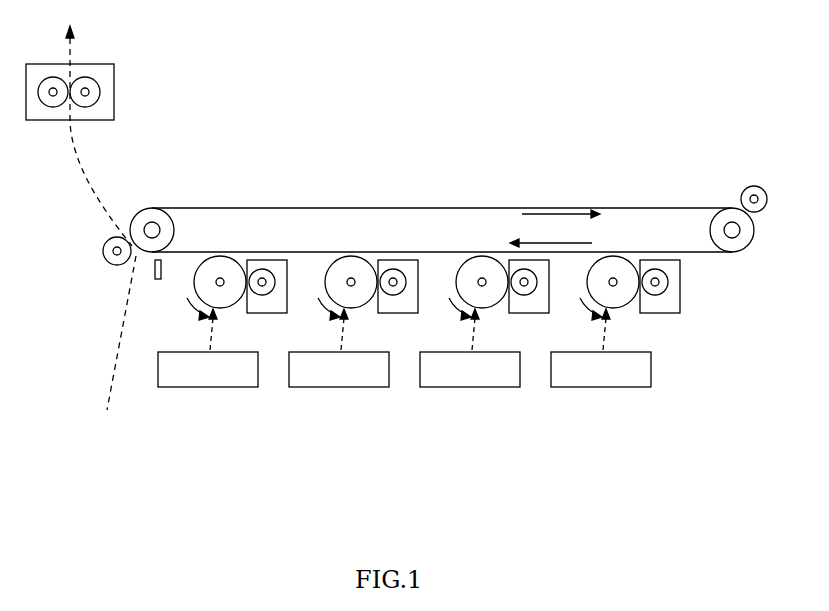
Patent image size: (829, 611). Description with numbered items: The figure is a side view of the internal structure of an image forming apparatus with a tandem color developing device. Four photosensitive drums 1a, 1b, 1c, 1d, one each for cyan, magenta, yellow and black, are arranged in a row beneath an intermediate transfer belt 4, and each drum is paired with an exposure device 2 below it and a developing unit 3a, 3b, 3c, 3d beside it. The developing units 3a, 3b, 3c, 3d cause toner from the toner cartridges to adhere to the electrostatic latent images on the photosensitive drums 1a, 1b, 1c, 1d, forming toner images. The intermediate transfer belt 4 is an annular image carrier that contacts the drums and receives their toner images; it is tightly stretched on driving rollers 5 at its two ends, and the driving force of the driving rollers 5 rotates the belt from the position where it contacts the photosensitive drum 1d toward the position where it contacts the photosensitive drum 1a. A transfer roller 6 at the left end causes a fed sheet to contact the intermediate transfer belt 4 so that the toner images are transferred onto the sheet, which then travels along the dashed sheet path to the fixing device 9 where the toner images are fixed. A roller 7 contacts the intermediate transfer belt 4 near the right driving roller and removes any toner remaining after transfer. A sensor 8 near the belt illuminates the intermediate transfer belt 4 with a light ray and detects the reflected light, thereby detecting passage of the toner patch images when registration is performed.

The photosensitive drum 1a is at (198, 265).
The photosensitive drum 1b is at (329, 265).
The photosensitive drum 1c is at (460, 265).
The photosensitive drum 1d is at (591, 265).
The exposure device 2 is at (208, 387).
The developing unit 3a is at (262, 313).
The developing unit 3b is at (393, 313).
The developing unit 3c is at (524, 313).
The developing unit 3d is at (655, 313).
The intermediate transfer belt 4 is at (523, 208).
The driving roller 5 is at (135, 213).
The transfer roller 6 is at (108, 263).
The roller 7 is at (755, 186).
The sensor 8 is at (157, 281).
The fixing device 9 is at (114, 88).